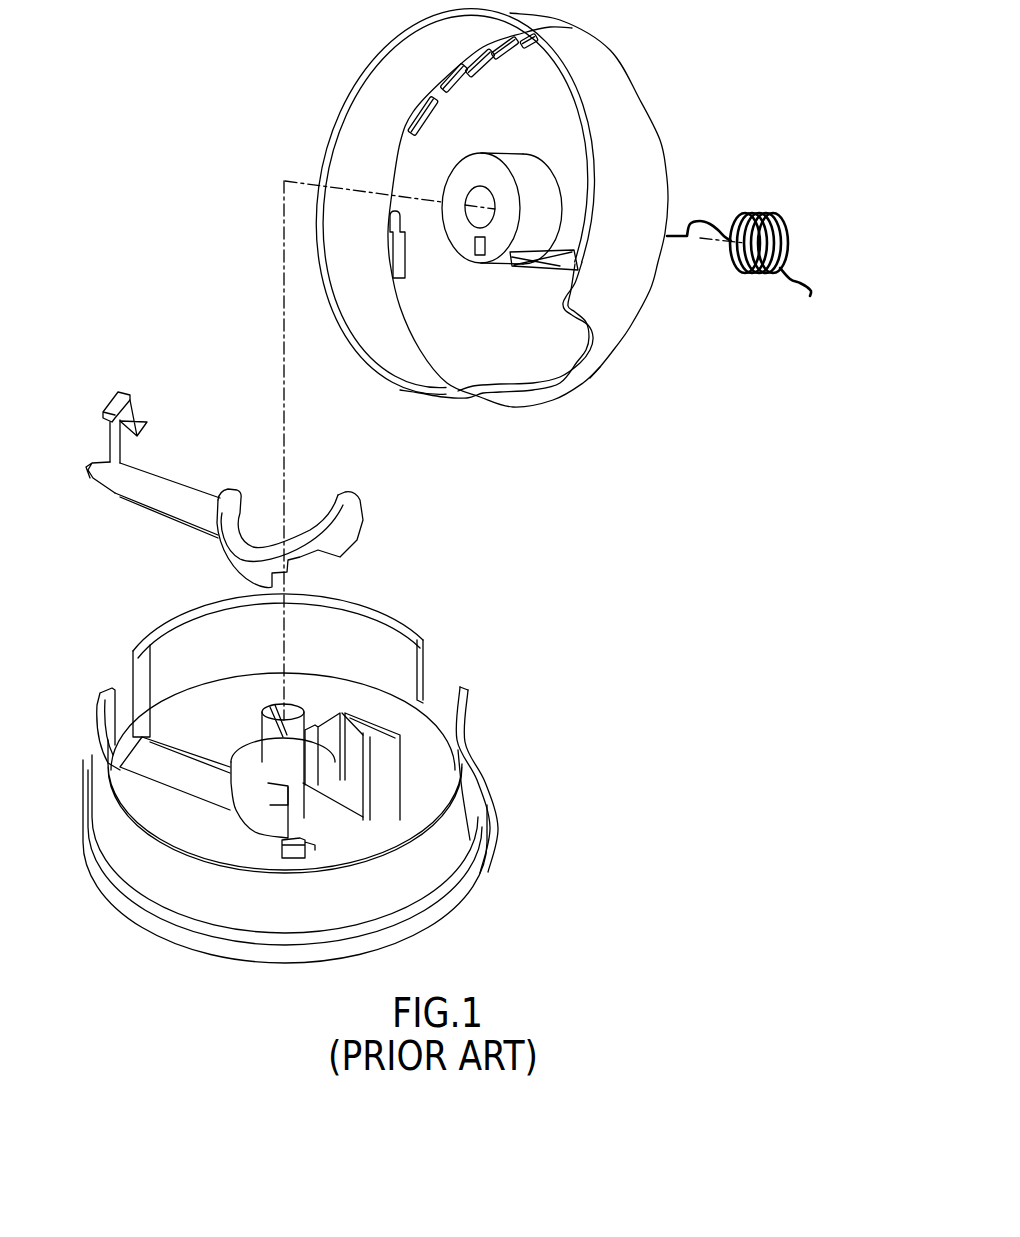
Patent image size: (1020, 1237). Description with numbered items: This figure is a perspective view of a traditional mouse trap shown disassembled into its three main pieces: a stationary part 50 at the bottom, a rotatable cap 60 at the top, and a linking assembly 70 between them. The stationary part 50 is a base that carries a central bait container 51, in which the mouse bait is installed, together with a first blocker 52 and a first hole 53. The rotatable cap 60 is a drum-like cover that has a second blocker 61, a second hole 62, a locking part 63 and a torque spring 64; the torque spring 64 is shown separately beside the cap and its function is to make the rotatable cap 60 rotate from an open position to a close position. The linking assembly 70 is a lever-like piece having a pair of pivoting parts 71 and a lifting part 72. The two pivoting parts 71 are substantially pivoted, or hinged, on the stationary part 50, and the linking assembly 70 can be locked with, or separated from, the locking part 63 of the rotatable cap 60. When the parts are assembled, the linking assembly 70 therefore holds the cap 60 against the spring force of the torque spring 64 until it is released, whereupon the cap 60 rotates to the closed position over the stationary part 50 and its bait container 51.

The stationary part 50 is at (389, 778).
The central bait container 51 is at (403, 812).
The first blocker 52 is at (407, 775).
The first hole 53 is at (410, 667).
The rotatable cap 60 is at (563, 272).
The second blocker 61 is at (563, 300).
The second hole 62 is at (557, 272).
The locking part 63 is at (400, 262).
The torque spring 64 is at (739, 349).
The linking assembly 70 is at (220, 411).
The pivoting parts 71 is at (92, 460).
The lifting part 72 is at (342, 494).